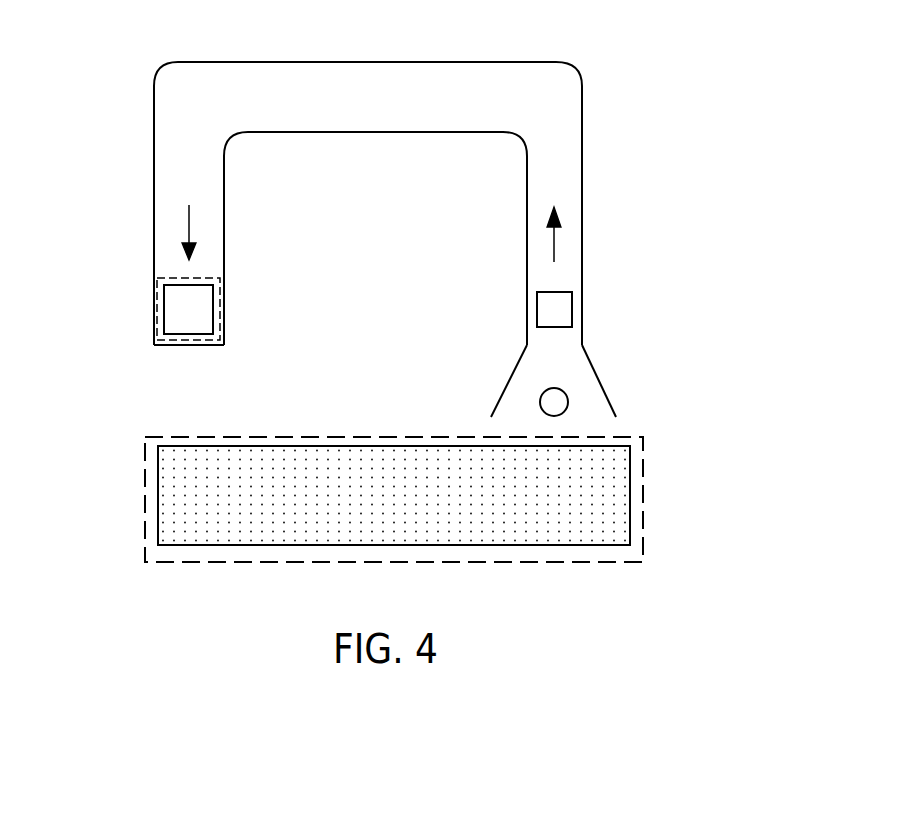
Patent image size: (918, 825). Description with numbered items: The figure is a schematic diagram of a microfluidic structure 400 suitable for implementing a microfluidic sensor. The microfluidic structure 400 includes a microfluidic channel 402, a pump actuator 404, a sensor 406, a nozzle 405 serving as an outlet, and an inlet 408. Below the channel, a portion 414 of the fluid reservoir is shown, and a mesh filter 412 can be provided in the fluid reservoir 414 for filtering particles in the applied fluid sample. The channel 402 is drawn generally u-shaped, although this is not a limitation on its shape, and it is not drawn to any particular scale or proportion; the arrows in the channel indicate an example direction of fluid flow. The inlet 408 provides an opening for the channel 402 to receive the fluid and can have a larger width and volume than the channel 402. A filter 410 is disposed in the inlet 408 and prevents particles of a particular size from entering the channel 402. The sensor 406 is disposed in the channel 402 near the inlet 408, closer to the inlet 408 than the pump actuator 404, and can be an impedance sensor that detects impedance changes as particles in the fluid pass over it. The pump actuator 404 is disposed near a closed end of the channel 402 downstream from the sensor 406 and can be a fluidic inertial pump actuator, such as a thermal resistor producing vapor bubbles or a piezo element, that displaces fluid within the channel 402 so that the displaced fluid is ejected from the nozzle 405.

The microfluidic structure 400 is at (402, 343).
The microfluidic channel 402 is at (345, 132).
The pump actuator 404 is at (213, 311).
The nozzle 405 is at (158, 296).
The sensor 406 is at (572, 313).
The inlet 408 is at (512, 377).
The filter 410 is at (568, 407).
The mesh filter 412 is at (625, 473).
The portion of the fluid reservoir 414 is at (643, 527).